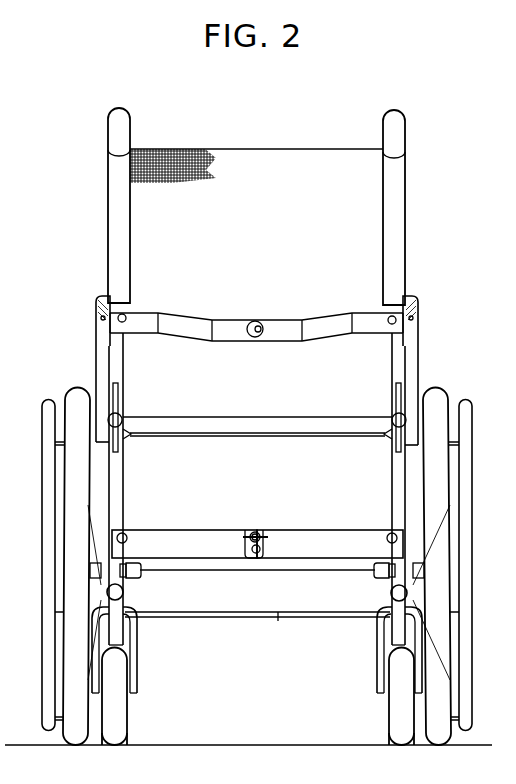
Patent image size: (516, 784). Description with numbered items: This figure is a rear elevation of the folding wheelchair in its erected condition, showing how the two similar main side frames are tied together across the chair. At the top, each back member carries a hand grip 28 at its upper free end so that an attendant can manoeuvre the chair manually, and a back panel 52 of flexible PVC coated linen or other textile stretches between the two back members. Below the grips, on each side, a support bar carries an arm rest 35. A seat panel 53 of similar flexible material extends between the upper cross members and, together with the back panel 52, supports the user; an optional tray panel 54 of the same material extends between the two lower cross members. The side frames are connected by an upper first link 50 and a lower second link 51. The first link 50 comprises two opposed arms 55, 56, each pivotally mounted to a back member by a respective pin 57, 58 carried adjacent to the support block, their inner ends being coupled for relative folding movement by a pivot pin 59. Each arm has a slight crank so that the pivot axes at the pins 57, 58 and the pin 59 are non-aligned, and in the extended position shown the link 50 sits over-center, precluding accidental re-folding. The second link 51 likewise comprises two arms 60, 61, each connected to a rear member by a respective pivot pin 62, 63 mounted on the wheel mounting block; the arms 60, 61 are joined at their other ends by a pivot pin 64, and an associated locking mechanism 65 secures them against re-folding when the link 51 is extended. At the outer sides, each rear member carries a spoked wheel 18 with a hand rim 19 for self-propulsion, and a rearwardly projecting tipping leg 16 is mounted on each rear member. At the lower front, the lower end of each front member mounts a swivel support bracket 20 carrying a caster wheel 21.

The tipping leg 16 is at (121, 597).
The spoked wheel 18 is at (70, 397).
The hand rim 19 is at (46, 410).
The swivel support bracket 20 is at (137, 690).
The caster wheel 21 is at (120, 732).
The hand grip 28 is at (118, 118).
The arm rest 35 is at (100, 318).
The upper first link 50 is at (256, 304).
The lower second link 51 is at (257, 529).
The back panel 52 is at (276, 162).
The seat panel 53 is at (330, 433).
The tray panel 54 is at (272, 614).
The arm of first link 55 is at (192, 320).
The arm of first link 56 is at (326, 320).
The pin 57 is at (106, 310).
The pin 58 is at (412, 305).
The pivot pin 59 is at (258, 325).
The arm of second link 60 is at (196, 535).
The arm of second link 61 is at (304, 535).
The pivot pin 62 is at (126, 533).
The pivot pin 63 is at (387, 533).
The pivot pin 64 is at (258, 554).
The locking mechanism 65 is at (258, 530).